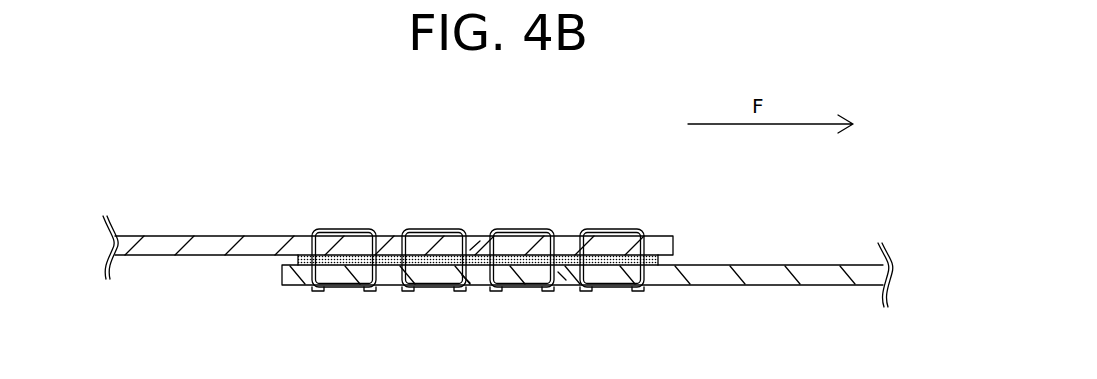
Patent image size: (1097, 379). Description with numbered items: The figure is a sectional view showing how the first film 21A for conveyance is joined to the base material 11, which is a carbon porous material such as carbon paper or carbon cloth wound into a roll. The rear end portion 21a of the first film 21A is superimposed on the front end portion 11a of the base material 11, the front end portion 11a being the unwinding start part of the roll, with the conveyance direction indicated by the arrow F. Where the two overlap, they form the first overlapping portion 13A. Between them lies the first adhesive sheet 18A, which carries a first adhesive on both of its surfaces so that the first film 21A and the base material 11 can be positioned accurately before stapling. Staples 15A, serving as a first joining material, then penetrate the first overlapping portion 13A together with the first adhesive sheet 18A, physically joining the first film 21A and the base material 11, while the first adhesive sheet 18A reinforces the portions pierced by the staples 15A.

The base material 11 is at (175, 247).
The front end portion 11a is at (477, 241).
The first overlapping portion 13A is at (562, 277).
The staples 15A is at (421, 229).
The first adhesive sheet 18A is at (386, 268).
The first film 21A is at (728, 272).
The rear end portion 21a is at (465, 270).